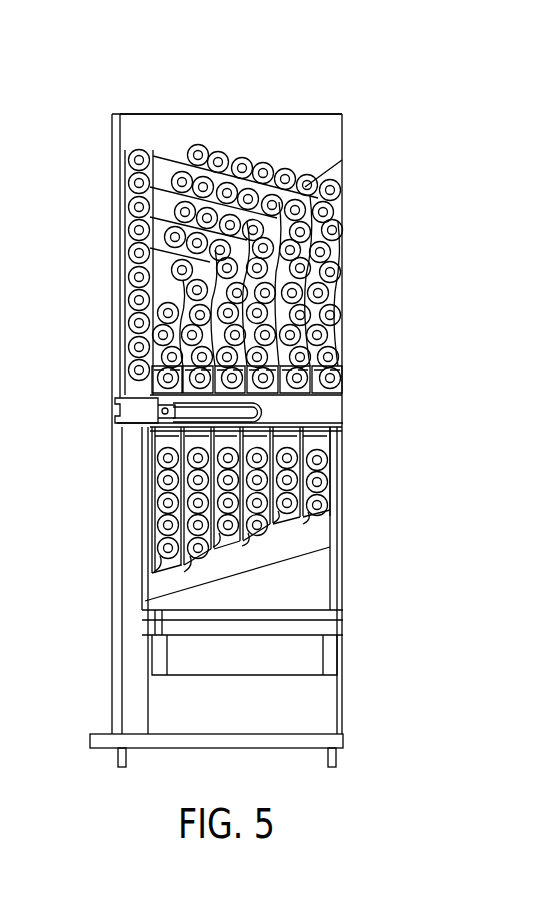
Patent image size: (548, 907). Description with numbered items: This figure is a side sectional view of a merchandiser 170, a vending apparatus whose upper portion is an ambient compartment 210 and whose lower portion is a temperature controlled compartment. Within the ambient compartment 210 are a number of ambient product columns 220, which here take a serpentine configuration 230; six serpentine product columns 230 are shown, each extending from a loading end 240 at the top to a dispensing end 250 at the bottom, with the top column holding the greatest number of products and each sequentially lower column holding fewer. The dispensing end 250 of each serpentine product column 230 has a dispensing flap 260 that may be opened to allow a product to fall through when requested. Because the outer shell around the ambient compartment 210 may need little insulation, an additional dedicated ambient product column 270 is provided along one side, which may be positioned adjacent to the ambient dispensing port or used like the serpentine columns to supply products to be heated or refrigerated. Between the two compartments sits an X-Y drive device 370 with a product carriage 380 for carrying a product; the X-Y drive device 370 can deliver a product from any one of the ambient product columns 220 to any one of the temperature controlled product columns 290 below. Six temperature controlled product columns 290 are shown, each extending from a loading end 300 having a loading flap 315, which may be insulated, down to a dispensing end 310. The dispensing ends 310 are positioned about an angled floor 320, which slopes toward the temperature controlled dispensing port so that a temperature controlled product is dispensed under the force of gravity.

The merchandiser 170 is at (128, 110).
The ambient compartment 210 is at (326, 130).
The loading end 240 is at (173, 124).
The dedicated ambient product column 270 is at (130, 158).
The ambient product columns 220 is at (315, 178).
The serpentine product columns 230 is at (338, 270).
The dispensing end 250 is at (341, 378).
The X-Y drive device 370 is at (106, 393).
The product carriage 380 is at (117, 410).
The loading end 300 is at (158, 455).
The temperature controlled product columns 290 is at (160, 473).
The dispensing end 310 is at (150, 555).
The angled floor 320 is at (305, 557).
The loading flap 315 is at (323, 427).
The dispensing flap 260 is at (287, 395).